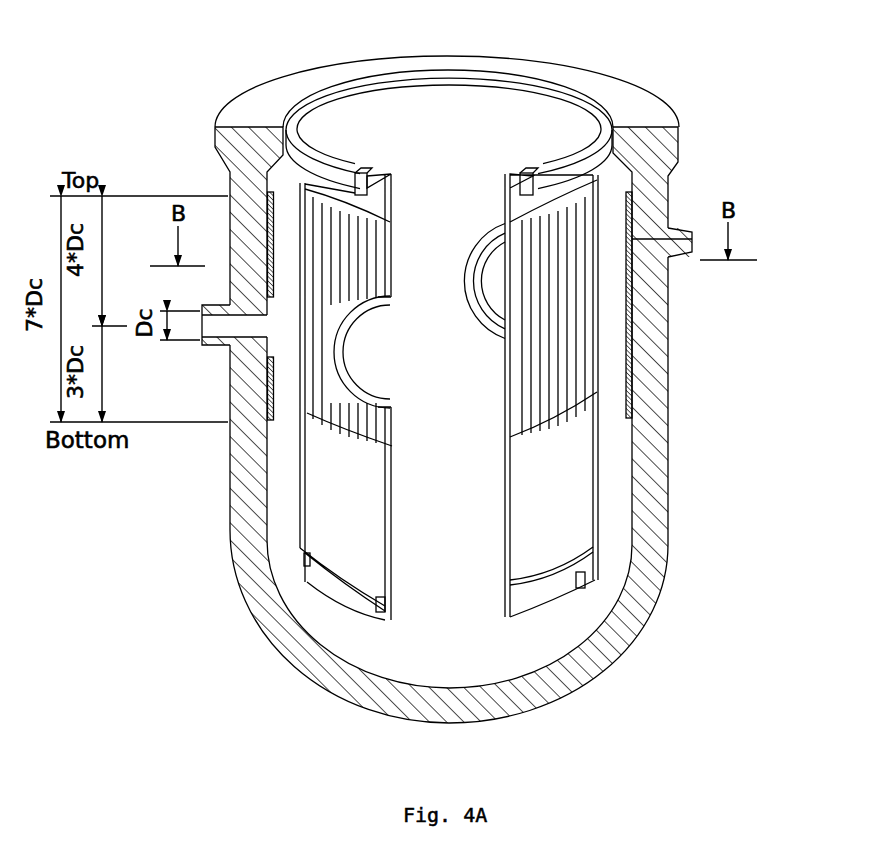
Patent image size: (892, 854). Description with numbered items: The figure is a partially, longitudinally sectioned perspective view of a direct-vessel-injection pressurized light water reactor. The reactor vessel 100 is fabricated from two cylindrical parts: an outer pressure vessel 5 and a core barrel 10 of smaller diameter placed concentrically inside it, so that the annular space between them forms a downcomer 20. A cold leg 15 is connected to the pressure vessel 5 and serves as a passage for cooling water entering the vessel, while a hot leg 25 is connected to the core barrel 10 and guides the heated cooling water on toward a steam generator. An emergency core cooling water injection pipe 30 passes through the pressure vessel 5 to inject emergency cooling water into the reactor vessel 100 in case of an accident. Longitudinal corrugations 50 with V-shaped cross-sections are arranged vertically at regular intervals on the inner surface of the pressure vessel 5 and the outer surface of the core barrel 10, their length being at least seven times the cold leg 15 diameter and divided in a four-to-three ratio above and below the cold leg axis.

The reactor vessel 100 is at (444, 367).
The pressure vessel 5 is at (662, 148).
The core barrel 10 is at (578, 155).
The cold leg 15 is at (213, 325).
The downcomer 20 is at (282, 490).
The hot leg 25 is at (345, 328).
The emergency core cooling water injection pipe 30 is at (668, 243).
The longitudinal corrugation 50 is at (300, 400).